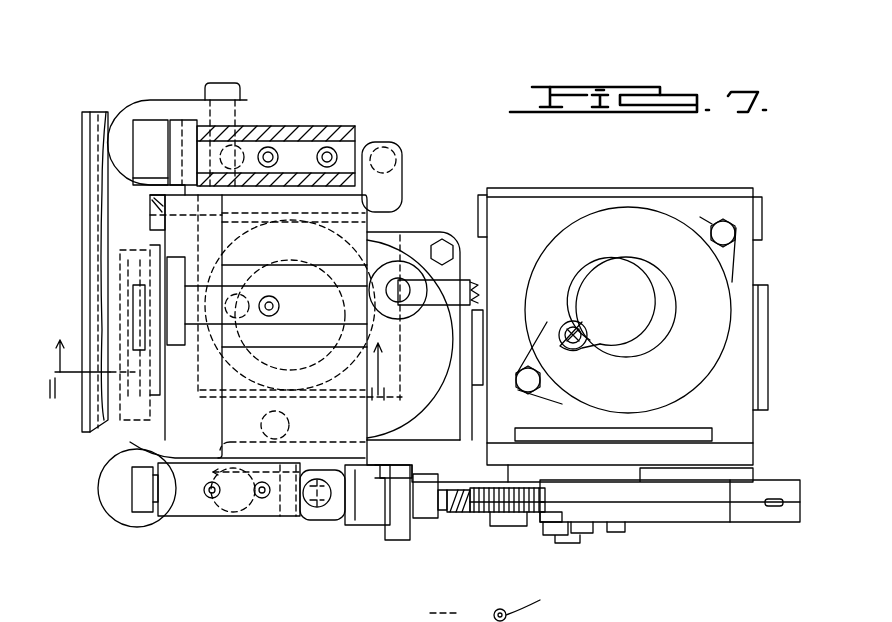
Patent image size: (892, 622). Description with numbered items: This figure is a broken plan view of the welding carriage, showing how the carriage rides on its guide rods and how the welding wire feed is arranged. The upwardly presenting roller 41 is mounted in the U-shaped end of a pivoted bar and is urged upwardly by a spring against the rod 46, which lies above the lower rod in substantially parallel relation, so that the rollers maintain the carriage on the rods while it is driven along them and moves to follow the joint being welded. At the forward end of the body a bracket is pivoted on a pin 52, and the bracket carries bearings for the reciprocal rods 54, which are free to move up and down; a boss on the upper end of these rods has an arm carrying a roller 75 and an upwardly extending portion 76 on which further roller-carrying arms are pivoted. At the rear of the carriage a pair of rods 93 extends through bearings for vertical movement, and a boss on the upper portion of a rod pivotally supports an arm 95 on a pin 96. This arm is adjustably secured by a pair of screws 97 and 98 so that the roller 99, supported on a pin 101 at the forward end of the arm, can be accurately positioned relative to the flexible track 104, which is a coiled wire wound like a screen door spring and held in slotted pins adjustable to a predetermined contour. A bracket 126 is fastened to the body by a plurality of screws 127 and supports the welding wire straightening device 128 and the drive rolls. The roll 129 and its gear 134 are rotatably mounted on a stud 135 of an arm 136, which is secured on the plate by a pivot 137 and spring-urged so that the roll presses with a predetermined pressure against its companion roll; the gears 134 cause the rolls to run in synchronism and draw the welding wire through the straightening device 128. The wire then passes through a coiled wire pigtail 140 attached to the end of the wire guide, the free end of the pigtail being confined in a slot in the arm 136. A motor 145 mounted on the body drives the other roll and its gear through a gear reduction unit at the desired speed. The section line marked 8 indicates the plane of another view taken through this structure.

The section line 8- 8 is at (231, 356).
The upwardly presenting roller 41 is at (178, 285).
The rod 46 is at (152, 212).
The pin 52 is at (235, 83).
The reciprocal rods 54 is at (340, 160).
The roller 75 is at (148, 135).
The upwardly extending portion 76 is at (290, 128).
The rods 93 is at (222, 520).
The arm 95 is at (188, 510).
The pin 96 is at (285, 525).
The screw 97 is at (211, 498).
The screw 98 is at (263, 498).
The roller 99 is at (128, 498).
The pin 101 is at (150, 495).
The flexible track 104 is at (518, 602).
The bracket 126 is at (548, 445).
The screws 127 is at (427, 478).
The welding wire straightening device 128 is at (778, 525).
The roll 129 is at (548, 503).
The gears 134 is at (500, 526).
The stud 135 is at (522, 526).
The arm 136 is at (495, 470).
The pivot 137 is at (462, 513).
The coiled wire pigtail 140 is at (440, 500).
The motor 145 is at (585, 230).